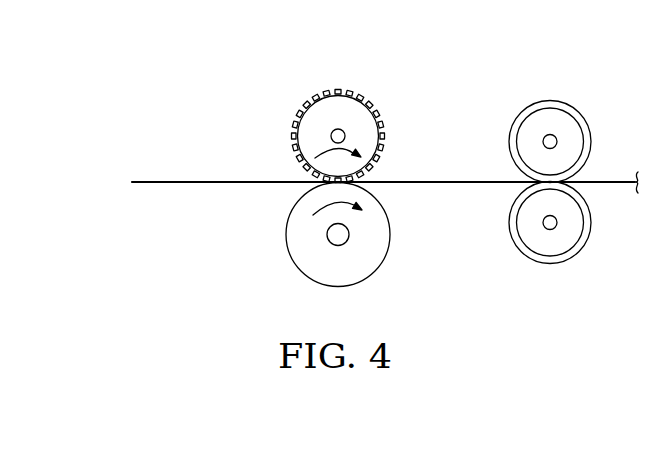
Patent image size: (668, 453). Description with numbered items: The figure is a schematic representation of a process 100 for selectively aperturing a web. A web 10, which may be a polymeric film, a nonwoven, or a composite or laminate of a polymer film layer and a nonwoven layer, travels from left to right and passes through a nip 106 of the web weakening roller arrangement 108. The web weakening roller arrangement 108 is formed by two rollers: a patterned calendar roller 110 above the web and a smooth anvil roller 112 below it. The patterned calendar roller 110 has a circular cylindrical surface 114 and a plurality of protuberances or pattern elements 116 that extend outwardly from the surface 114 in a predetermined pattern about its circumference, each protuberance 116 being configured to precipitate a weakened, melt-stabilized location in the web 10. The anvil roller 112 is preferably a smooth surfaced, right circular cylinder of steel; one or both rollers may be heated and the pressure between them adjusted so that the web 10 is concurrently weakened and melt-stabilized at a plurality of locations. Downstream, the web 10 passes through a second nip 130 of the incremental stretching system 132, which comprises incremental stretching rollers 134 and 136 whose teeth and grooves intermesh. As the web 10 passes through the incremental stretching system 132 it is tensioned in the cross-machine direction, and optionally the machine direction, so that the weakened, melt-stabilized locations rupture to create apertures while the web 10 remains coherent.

The process 100 is at (153, 93).
The web 10 is at (230, 181).
The nip 106 is at (290, 195).
The web weakening roller arrangement 108 is at (369, 82).
The patterned calendar roller 110 is at (331, 111).
The smooth anvil roller 112 is at (372, 255).
The circular cylindrical surface 114 is at (308, 106).
The protuberances 116 is at (382, 125).
The nip of pressure rollers 130 is at (511, 191).
The incremental stretching system 132 is at (570, 166).
The incremental stretching roller 134 is at (573, 132).
The incremental stretching roller 136 is at (572, 233).